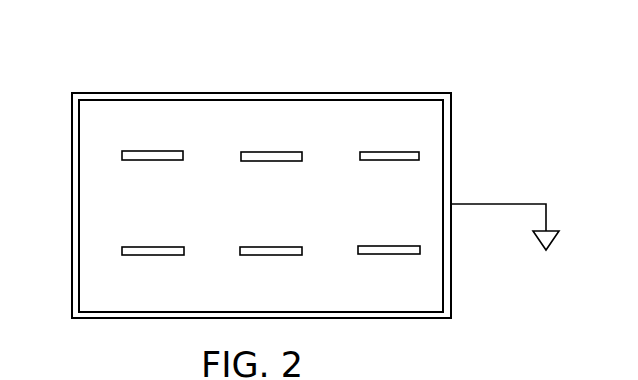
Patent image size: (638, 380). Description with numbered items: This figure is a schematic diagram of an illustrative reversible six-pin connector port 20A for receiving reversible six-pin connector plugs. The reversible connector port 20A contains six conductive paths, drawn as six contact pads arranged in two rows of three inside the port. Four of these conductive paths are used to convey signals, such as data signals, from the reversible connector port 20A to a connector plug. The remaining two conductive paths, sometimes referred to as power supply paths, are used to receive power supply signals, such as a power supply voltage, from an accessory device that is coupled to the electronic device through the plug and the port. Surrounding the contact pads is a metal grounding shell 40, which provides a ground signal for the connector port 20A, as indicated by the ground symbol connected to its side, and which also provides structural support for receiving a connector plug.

The reversible connector port 20A is at (456, 52).
The metal grounding shell 40 is at (72, 92).